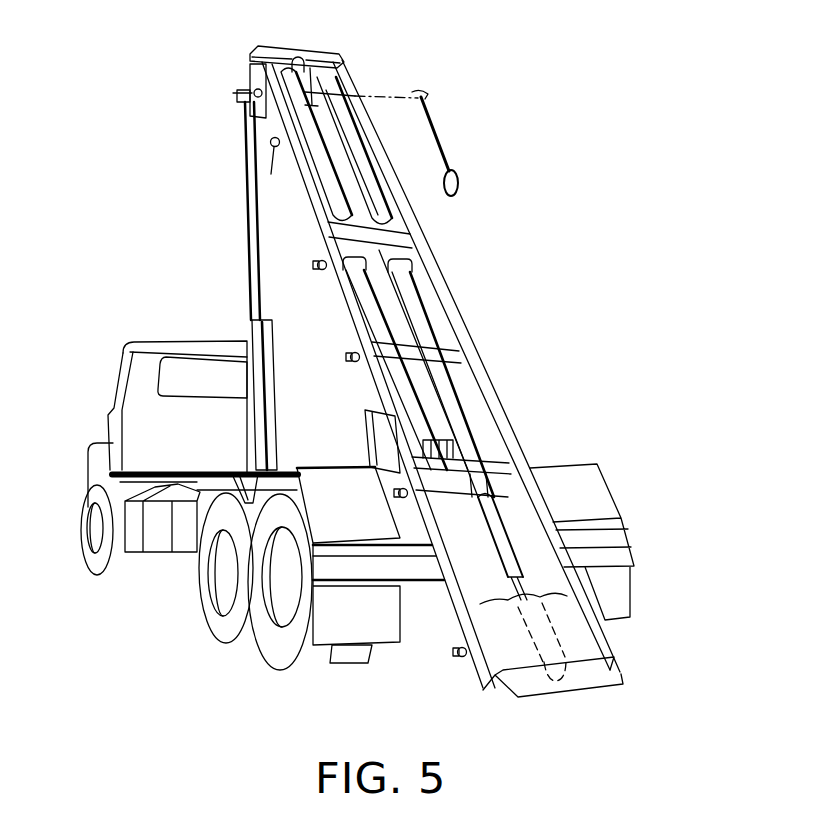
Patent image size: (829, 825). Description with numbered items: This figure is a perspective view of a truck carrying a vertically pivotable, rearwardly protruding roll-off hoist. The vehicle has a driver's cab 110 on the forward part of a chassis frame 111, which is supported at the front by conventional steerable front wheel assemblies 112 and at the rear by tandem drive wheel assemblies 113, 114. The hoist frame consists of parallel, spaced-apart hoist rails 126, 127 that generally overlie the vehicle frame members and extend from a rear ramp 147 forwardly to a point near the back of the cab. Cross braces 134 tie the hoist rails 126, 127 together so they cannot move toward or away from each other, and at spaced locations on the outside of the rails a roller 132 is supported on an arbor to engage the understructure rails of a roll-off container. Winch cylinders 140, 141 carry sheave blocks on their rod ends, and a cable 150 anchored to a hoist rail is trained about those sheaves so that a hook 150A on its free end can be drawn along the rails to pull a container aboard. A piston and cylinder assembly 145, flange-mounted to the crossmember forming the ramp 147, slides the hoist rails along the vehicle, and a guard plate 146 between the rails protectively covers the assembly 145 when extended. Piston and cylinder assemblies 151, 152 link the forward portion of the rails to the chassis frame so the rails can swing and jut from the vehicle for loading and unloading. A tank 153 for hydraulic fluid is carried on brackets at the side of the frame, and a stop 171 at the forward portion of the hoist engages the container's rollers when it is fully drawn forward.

The driver's cab 110 is at (146, 340).
The chassis frame 111 is at (158, 477).
The front wheel assemblies 112 is at (82, 530).
The tandem drive wheel assembly 113 is at (202, 612).
The tandem drive wheel assembly 114 is at (268, 660).
The hoist rail 126 is at (348, 313).
The hoist rail 127 is at (437, 272).
The roller 132 is at (271, 175).
The cross braces 134 is at (343, 59).
The winch cylinder 140 is at (278, 70).
The winch cylinder 141 is at (362, 166).
The piston and cylinder assembly 145 is at (493, 513).
The guard plate 146 is at (575, 633).
The ramp 147 is at (588, 677).
The cable 150 is at (319, 62).
The hook 150A is at (466, 183).
The piston and cylinder assembly 151 is at (250, 312).
The piston and cylinder assembly 152 is at (362, 436).
The tank 153 is at (153, 556).
The stop 171 is at (278, 53).